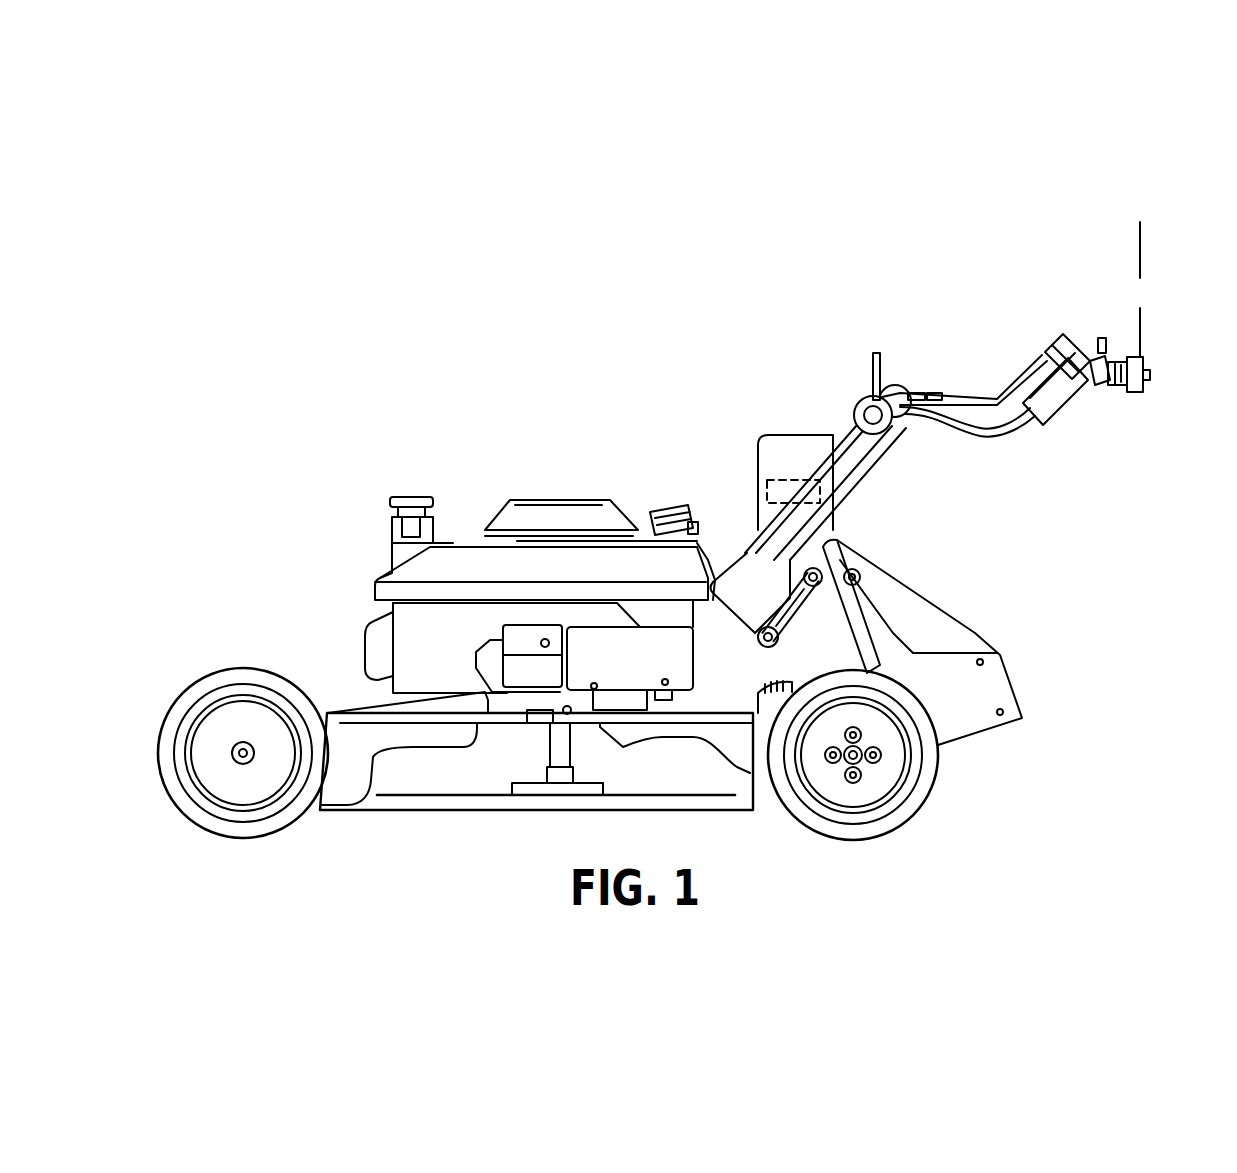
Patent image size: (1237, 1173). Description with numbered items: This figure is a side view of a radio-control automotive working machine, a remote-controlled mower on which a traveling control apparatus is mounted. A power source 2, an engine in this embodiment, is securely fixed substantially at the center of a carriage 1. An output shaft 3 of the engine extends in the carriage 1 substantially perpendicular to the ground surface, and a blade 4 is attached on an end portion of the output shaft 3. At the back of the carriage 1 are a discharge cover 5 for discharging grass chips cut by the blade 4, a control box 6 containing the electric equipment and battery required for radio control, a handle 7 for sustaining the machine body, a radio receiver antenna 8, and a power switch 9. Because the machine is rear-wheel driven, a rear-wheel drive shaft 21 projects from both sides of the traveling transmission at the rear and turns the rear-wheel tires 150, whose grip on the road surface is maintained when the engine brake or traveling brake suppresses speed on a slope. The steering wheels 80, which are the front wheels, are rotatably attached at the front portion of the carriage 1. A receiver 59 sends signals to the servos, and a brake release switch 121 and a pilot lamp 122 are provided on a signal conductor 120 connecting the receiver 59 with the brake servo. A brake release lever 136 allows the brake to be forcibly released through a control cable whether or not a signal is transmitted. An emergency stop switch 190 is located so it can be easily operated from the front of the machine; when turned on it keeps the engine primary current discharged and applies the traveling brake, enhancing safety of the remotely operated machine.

The carriage 1 is at (353, 743).
The power source 2 is at (510, 497).
The output shaft 3 is at (547, 733).
The blade 4 is at (643, 793).
The discharge cover 5 is at (918, 628).
The control box 6 is at (777, 453).
The handle 7 is at (888, 392).
The radio receiver antenna 8 is at (1135, 255).
The power switch 9 is at (1123, 367).
The rear-wheel drive shaft 21 is at (870, 750).
The receiver 59 is at (765, 483).
The steering wheels 80 is at (172, 698).
The signal conductor 120 is at (1003, 437).
The brake release switch 121 is at (1097, 340).
The pilot lamp 122 is at (1057, 342).
The brake release lever 136 is at (875, 363).
The rear-wheel tires 150 is at (943, 773).
The emergency stop switch 190 is at (390, 498).